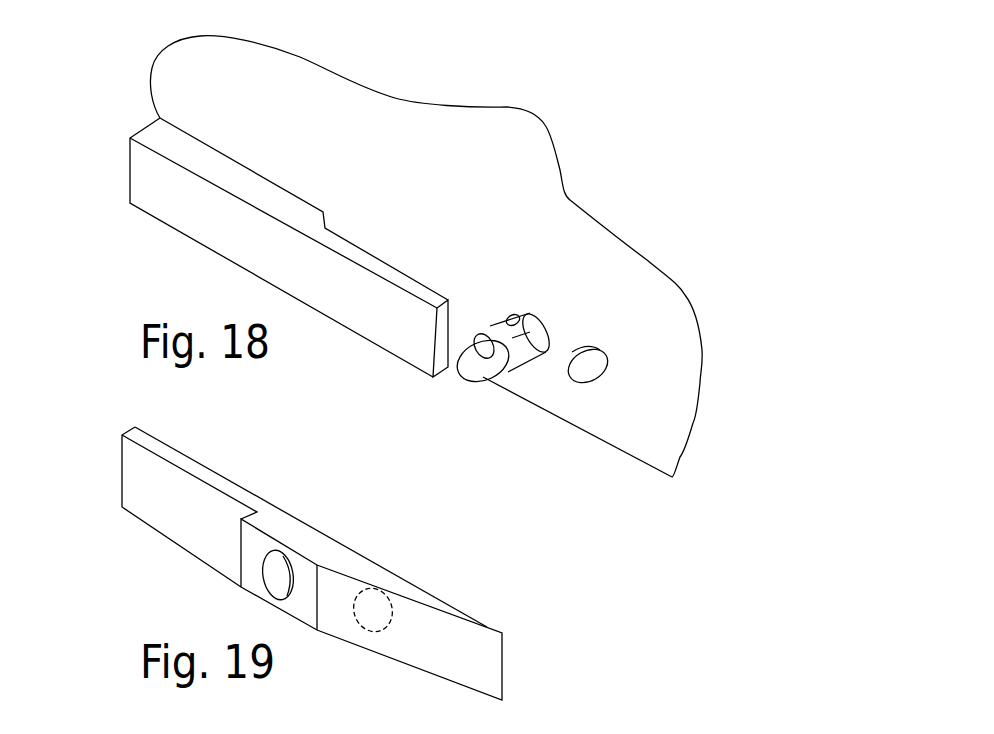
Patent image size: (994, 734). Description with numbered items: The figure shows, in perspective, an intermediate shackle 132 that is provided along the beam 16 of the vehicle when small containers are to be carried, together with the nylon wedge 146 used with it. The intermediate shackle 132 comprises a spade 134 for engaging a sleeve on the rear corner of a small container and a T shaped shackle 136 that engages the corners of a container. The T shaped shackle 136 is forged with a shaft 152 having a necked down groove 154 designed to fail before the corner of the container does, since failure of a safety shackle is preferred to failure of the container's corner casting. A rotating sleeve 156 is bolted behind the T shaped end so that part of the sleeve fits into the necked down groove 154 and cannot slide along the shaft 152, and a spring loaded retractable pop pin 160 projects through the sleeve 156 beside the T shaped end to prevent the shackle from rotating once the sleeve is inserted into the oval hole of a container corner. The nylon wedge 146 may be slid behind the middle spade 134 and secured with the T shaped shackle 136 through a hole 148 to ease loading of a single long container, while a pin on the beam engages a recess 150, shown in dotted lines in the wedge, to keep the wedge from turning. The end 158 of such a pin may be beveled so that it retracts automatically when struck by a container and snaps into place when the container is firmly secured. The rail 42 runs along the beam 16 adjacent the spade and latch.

In FIG. 18, the beam 16 is at (487, 123).
In FIG. 18, the guide rail 42 is at (183, 143).
In FIG. 18, the spade 134 is at (377, 313).
In FIG. 18, the shaft 152 is at (527, 313).
In FIG. 18, the necked down groove 154 is at (477, 343).
In FIG. 18, the rotating sleeve 156 is at (512, 338).
In FIG. 18, the end 158 is at (587, 373).
In FIG. 18, the spring loaded retractable pop pin 160 is at (475, 355).
In FIG. 18, the intermediate shackle 132 is at (463, 367).
In FIG. 18, the T shaped shackle 136 is at (485, 378).
In FIG. 18, the hole 148 is at (567, 383).
In FIG. 19, the hole 148 is at (283, 563).
In FIG. 19, the nylon wedge 146 is at (318, 543).
In FIG. 19, the recess 150 is at (378, 613).